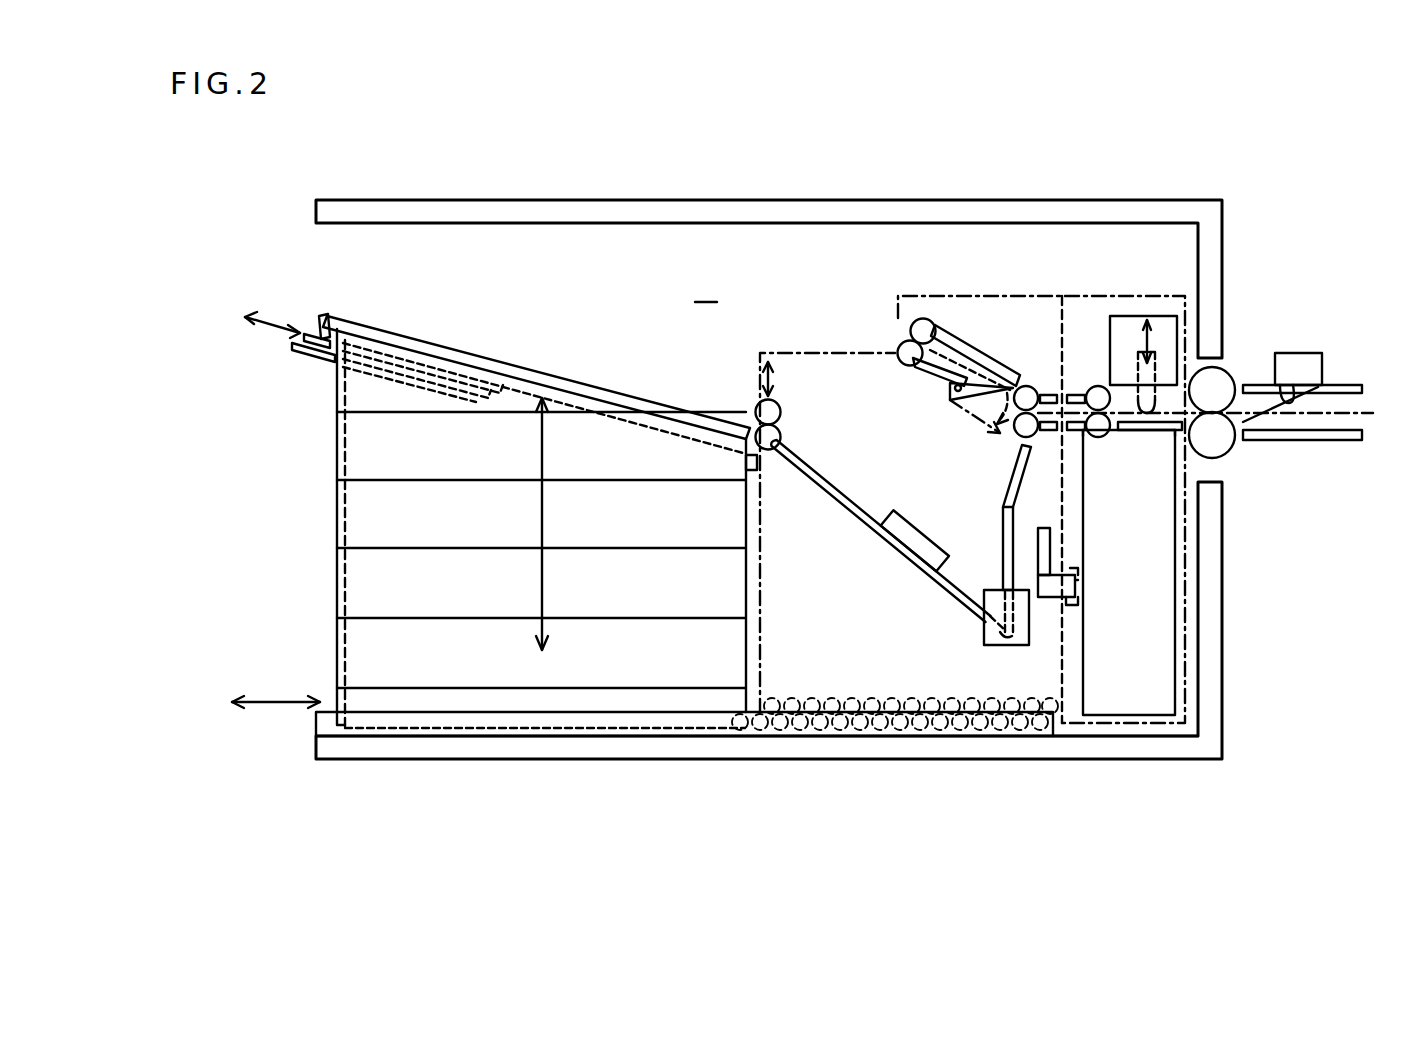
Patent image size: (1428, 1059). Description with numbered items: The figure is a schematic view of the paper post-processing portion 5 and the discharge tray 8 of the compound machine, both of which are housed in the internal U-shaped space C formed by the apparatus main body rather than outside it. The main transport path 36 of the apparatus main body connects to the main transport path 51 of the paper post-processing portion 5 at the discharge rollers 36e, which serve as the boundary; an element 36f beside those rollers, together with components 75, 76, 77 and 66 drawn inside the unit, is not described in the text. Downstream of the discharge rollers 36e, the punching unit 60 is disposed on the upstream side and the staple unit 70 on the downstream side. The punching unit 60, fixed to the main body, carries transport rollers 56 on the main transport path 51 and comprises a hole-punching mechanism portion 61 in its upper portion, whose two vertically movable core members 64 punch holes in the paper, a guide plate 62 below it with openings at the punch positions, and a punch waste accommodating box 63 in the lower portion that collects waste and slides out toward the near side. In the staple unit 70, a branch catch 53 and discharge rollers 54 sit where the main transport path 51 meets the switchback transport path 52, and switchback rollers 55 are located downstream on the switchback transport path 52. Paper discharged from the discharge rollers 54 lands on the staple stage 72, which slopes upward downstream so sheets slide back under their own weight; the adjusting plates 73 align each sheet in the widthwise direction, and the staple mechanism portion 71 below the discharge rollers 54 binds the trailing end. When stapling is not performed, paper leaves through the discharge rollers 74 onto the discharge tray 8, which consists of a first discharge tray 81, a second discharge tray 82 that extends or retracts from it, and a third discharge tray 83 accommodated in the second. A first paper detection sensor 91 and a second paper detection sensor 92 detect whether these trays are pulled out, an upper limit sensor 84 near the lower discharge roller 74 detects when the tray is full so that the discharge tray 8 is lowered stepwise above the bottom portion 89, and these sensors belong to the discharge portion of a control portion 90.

The paper post-processing portion 5 is at (1232, 260).
The discharge tray 8 is at (598, 372).
The first discharge tray 81 is at (327, 317).
The second discharge tray 82 is at (310, 333).
The third discharge tray 83 is at (293, 350).
The upper limit sensor 84 is at (760, 462).
The bottom portion 89 is at (412, 712).
The control portion 90 is at (908, 752).
The first paper detection sensor 91 is at (370, 587).
The second paper detection sensor 92 is at (330, 520).
The space C is at (795, 491).
The discharge rollers 74 is at (783, 412).
The staple stage 72 is at (846, 496).
The adjusting plates 73 is at (906, 540).
The staple mechanism portion 71 is at (1018, 646).
The sensor arm 77 is at (1042, 530).
The sensor body 76 is at (1048, 598).
The sensor 66 is at (1078, 578).
The rollers 75 is at (814, 732).
The staple unit 70 is at (1006, 280).
The switchback transport path 52 is at (888, 322).
The branch catch 53 is at (980, 387).
The switchback rollers 55 is at (908, 362).
The discharge rollers 54 is at (1027, 396).
The punching unit 60 is at (1107, 292).
The transport rollers 56 is at (1097, 396).
The hole-punching mechanism portion 61 is at (1127, 332).
The core members 64 is at (1140, 430).
The main transport path 51 is at (1120, 446).
The guide plate 62 is at (1163, 432).
The punch waste accommodating box 63 is at (1162, 680).
The discharge rollers 36e is at (1232, 448).
The sensor 36f is at (1325, 362).
The main transport path 36 is at (1372, 418).